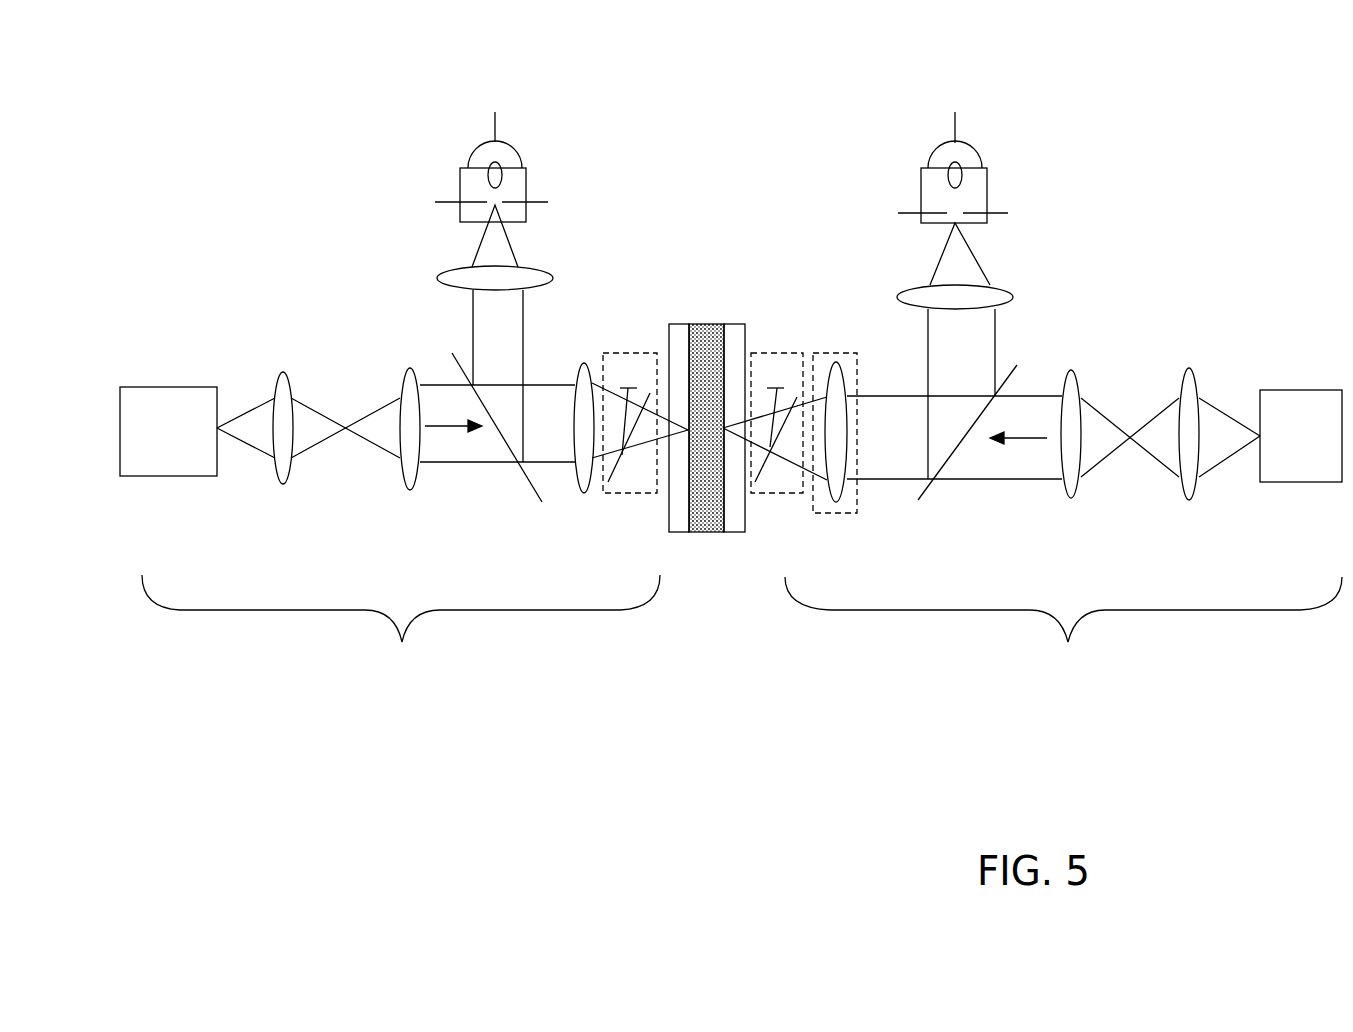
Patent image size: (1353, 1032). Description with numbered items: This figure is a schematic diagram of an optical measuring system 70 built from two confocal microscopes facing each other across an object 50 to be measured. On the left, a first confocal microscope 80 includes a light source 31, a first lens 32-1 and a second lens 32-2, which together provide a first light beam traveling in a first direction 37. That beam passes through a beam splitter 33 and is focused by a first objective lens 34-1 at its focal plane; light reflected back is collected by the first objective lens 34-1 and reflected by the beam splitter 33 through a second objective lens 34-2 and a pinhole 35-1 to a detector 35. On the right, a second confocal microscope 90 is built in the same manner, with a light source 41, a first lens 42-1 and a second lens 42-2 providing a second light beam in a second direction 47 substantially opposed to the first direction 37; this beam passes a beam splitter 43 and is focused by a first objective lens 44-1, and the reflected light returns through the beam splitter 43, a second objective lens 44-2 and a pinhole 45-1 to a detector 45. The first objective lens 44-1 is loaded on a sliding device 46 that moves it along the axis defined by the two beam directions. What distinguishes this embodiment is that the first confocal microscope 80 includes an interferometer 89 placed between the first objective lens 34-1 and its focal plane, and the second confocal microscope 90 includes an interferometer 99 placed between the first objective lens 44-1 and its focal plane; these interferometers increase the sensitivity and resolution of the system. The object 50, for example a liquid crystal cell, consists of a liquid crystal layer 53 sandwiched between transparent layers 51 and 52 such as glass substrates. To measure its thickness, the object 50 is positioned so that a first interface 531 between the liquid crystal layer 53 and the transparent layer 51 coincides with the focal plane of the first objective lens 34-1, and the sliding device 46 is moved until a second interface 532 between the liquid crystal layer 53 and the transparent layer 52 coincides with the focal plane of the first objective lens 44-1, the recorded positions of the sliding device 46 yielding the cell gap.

The optical measuring system 70 is at (1197, 153).
The light source 31 is at (177, 452).
The light source 41 is at (1324, 452).
The first lens 32-1 is at (280, 399).
The second lens 32-2 is at (414, 408).
The beam splitter 33 is at (497, 437).
The first objective lens 34-1 is at (577, 402).
The second objective lens 34-2 is at (457, 268).
The detector 35 is at (491, 149).
The pinhole 35-1 is at (458, 201).
The first direction 37 is at (448, 430).
The first lens 42-1 is at (1192, 408).
The second lens 42-2 is at (1080, 407).
The beam splitter 43 is at (967, 450).
The first objective lens 44-1 is at (833, 365).
The second objective lens 44-2 is at (982, 279).
The detector 45 is at (953, 149).
The pinhole 45-1 is at (920, 211).
The sliding device 46 is at (837, 513).
The second direction 47 is at (1023, 440).
The object 50 is at (686, 453).
The transparent layer 51 is at (683, 325).
The transparent layer 52 is at (740, 325).
The liquid crystal layer 53 is at (706, 325).
The first interface 531 is at (690, 460).
The second interface 532 is at (723, 508).
The first confocal microscope 80 is at (401, 646).
The interferometer 89 is at (627, 350).
The second confocal microscope 90 is at (1063, 647).
The interferometer 99 is at (772, 350).